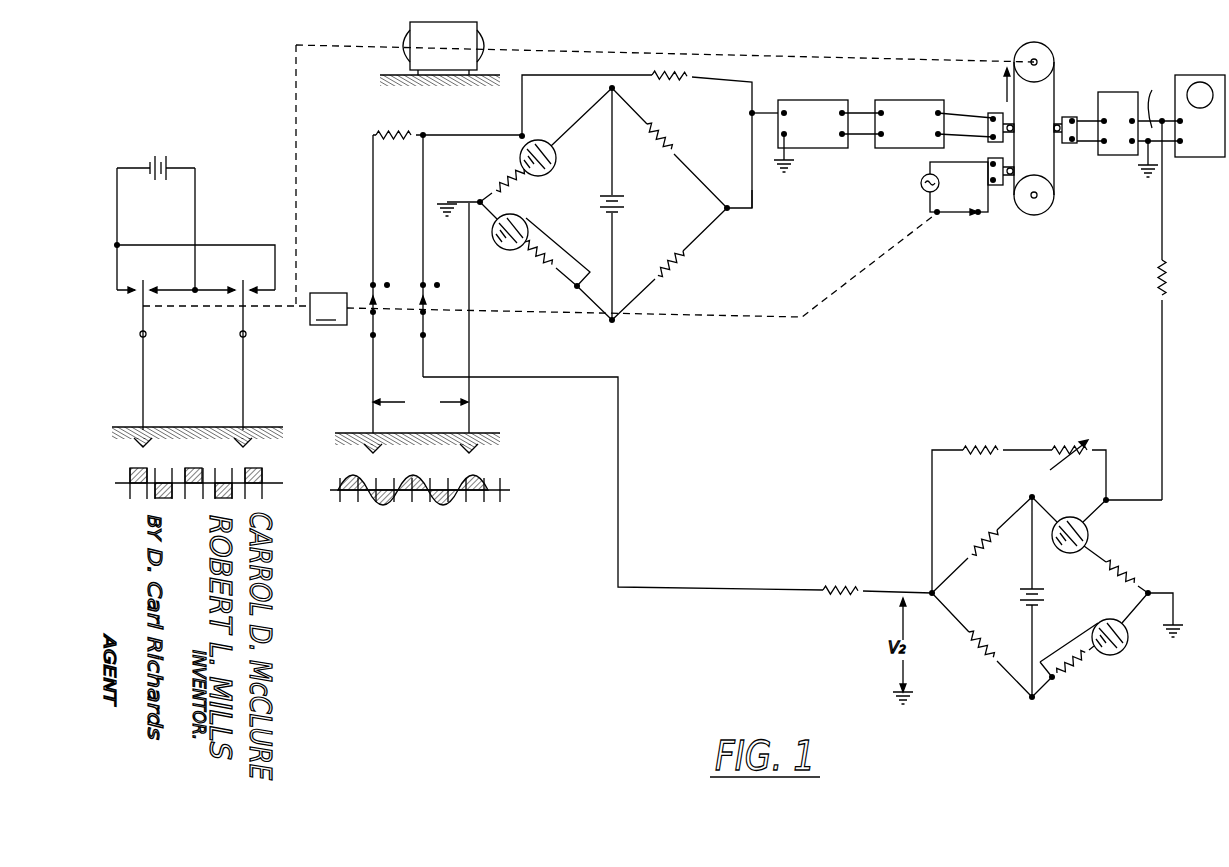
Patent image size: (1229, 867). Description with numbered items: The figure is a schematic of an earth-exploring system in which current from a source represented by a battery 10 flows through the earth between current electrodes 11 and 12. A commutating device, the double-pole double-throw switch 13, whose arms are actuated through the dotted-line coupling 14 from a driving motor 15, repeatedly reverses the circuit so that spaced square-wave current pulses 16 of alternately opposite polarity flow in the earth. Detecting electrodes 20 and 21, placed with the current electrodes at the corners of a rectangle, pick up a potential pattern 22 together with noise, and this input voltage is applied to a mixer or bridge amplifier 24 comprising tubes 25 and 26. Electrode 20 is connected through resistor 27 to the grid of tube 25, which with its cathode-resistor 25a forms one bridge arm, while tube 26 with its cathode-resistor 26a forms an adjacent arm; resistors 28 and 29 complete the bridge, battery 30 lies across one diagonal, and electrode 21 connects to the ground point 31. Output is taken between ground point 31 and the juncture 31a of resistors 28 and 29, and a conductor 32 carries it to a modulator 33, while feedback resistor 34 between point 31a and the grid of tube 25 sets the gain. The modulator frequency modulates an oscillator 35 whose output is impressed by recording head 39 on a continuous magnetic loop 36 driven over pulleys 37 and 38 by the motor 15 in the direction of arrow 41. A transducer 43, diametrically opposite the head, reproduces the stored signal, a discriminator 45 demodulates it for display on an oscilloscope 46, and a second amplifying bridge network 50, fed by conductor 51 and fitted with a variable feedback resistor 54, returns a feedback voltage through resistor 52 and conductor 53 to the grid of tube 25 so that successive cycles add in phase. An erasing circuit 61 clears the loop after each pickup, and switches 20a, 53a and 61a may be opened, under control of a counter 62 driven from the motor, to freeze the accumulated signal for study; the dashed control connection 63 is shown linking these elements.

The battery 10 is at (162, 162).
The current electrode 11 is at (144, 432).
The current electrode 12 is at (236, 428).
The double-pole double-throw switch 13 is at (208, 346).
The dotted-line coupling 14 is at (298, 132).
The driving motor 15 is at (408, 40).
The square wave current pulses 16 is at (162, 483).
The detecting electrode 20 is at (368, 430).
The switch 20a is at (370, 322).
The detecting electrode 21 is at (469, 432).
The potential pattern 22 is at (393, 488).
The bridge amplifier 24 is at (648, 171).
The tube 25 is at (556, 161).
The cathode-resistor 25a is at (513, 186).
The tube 26 is at (501, 250).
The cathode-resistor 26a is at (548, 268).
The resistor 27 is at (401, 134).
The resistor 28 is at (664, 136).
The resistor 29 is at (672, 264).
The battery 30 is at (622, 207).
The ground point 31 is at (480, 200).
The output point 31a is at (728, 211).
The conductor 32 is at (752, 191).
The modulator 33 is at (824, 138).
The feedback resistor 34 is at (676, 80).
The oscillator 35 is at (921, 138).
The magnetic tape loop 36 is at (1054, 95).
The pulley 37 is at (1051, 56).
The pulley 38 is at (1048, 214).
The recording head 39 is at (988, 144).
The arrow 41 is at (1002, 93).
The transducer 43 is at (1066, 150).
The discriminator 45 is at (1128, 116).
The oscilloscope 46 is at (1210, 144).
The second amplifying bridge network 50 is at (1076, 606).
The conductor 51 is at (1162, 359).
The resistor 52 is at (851, 590).
The conductor 53 is at (702, 588).
The switch 53a is at (423, 326).
The variable feedback resistor 54 is at (1059, 448).
The erasing circuit 61 is at (976, 195).
The switch 61a is at (977, 215).
The counter 62 is at (245, 309).
The dashed control connection 63 is at (777, 319).